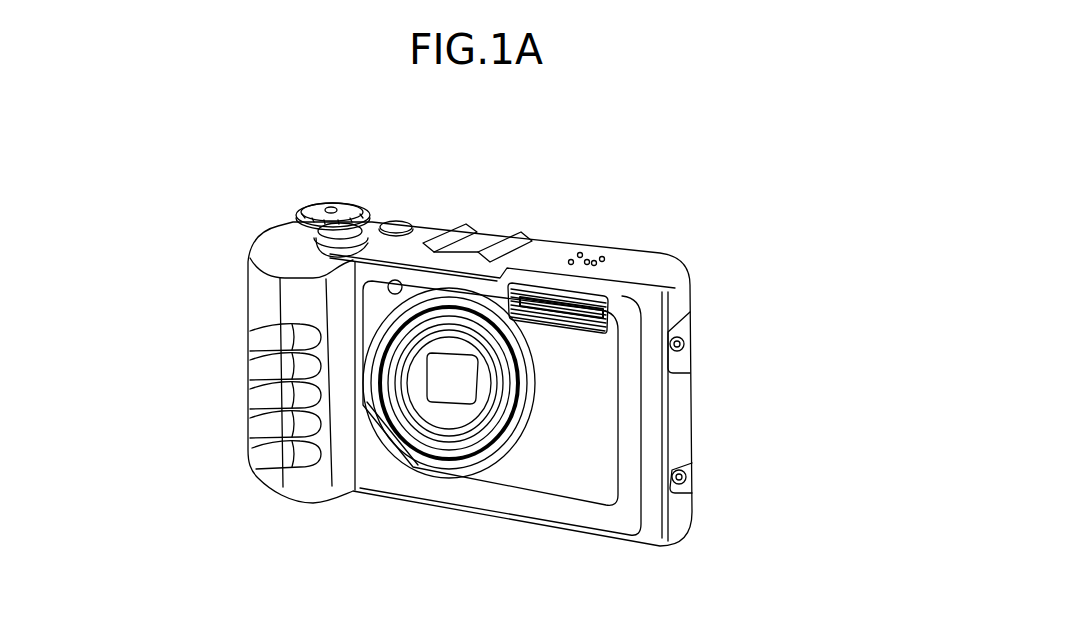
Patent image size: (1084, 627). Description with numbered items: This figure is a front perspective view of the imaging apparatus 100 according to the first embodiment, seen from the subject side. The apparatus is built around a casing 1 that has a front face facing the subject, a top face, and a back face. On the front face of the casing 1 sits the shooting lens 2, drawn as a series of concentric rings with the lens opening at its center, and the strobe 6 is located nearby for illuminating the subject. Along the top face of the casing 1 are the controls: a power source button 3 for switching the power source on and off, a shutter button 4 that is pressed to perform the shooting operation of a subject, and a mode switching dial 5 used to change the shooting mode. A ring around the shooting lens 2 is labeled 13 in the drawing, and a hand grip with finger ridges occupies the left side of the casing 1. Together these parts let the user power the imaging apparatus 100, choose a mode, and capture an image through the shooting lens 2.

The imaging apparatus 100 is at (696, 202).
The casing 1 is at (681, 450).
The shooting lens 2 is at (431, 404).
The power source button 3 is at (402, 222).
The shutter button 4 is at (344, 228).
The mode switching dial 5 is at (312, 205).
The strobe 6 is at (582, 309).
The lens barrel 13 is at (538, 370).